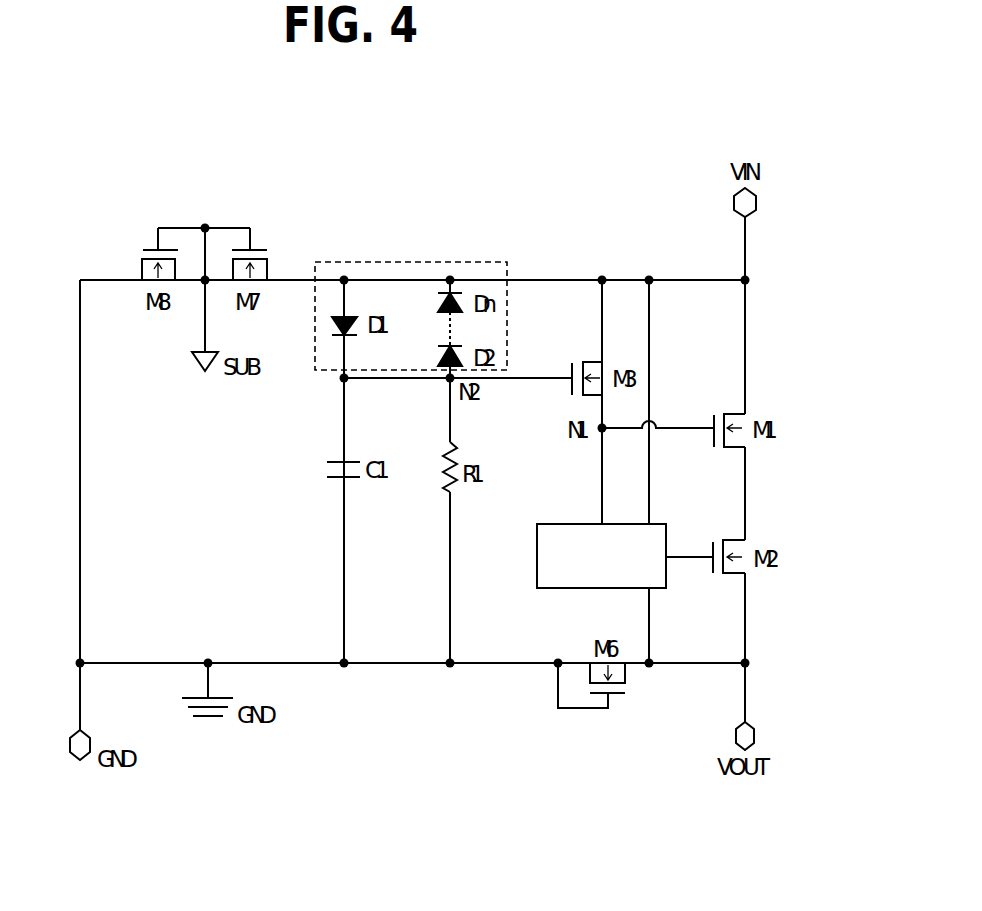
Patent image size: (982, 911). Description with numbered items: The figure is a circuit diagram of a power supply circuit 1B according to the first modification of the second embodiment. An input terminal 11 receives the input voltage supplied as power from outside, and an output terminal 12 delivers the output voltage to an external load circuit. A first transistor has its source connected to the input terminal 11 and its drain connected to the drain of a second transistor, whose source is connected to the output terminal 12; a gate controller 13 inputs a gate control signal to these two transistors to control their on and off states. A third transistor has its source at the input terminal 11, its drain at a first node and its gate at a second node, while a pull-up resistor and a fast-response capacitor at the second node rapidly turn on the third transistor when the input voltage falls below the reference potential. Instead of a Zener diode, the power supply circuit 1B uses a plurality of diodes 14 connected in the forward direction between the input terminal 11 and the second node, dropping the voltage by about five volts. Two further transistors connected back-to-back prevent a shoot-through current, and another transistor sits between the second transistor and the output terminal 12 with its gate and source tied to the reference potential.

The power supply circuit 1B is at (508, 160).
The input terminal 11 is at (757, 203).
The output terminal 12 is at (754, 737).
The gate controller 13 is at (572, 524).
The diode circuit (voltage clamp circuit) 14 is at (413, 262).